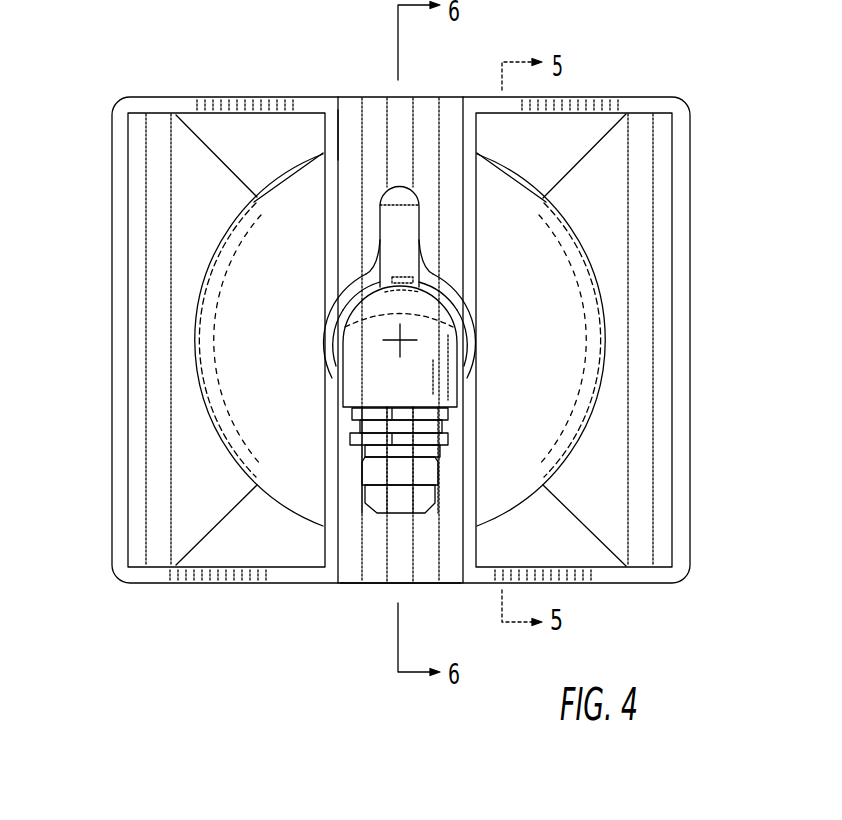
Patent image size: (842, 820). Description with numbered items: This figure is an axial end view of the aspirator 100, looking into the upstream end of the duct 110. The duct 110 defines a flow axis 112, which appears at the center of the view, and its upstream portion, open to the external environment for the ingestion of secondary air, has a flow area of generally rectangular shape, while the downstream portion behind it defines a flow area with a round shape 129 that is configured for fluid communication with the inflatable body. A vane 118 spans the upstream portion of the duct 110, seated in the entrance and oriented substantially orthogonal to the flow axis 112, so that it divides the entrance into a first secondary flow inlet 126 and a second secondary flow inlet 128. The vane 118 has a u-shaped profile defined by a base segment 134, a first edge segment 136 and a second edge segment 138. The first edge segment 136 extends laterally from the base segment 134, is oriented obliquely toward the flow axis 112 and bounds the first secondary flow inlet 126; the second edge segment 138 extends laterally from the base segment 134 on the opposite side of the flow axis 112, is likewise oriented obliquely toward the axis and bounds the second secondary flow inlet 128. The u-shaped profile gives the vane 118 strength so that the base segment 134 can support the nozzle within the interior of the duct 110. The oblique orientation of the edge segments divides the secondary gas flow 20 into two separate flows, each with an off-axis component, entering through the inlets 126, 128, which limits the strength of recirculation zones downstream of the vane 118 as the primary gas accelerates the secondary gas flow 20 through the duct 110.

The aspirator 100 is at (143, 637).
The duct 110 is at (570, 552).
The flow axis 112 is at (398, 341).
The vane 118 is at (428, 135).
The first secondary flow inlet 126 is at (253, 320).
The second secondary flow inlet 128 is at (545, 343).
The round shape 129 is at (550, 193).
The base segment 134 is at (397, 570).
The first edge segment 136 is at (348, 147).
The second edge segment 138 is at (452, 205).
The secondary gas flow 20 is at (258, 380).